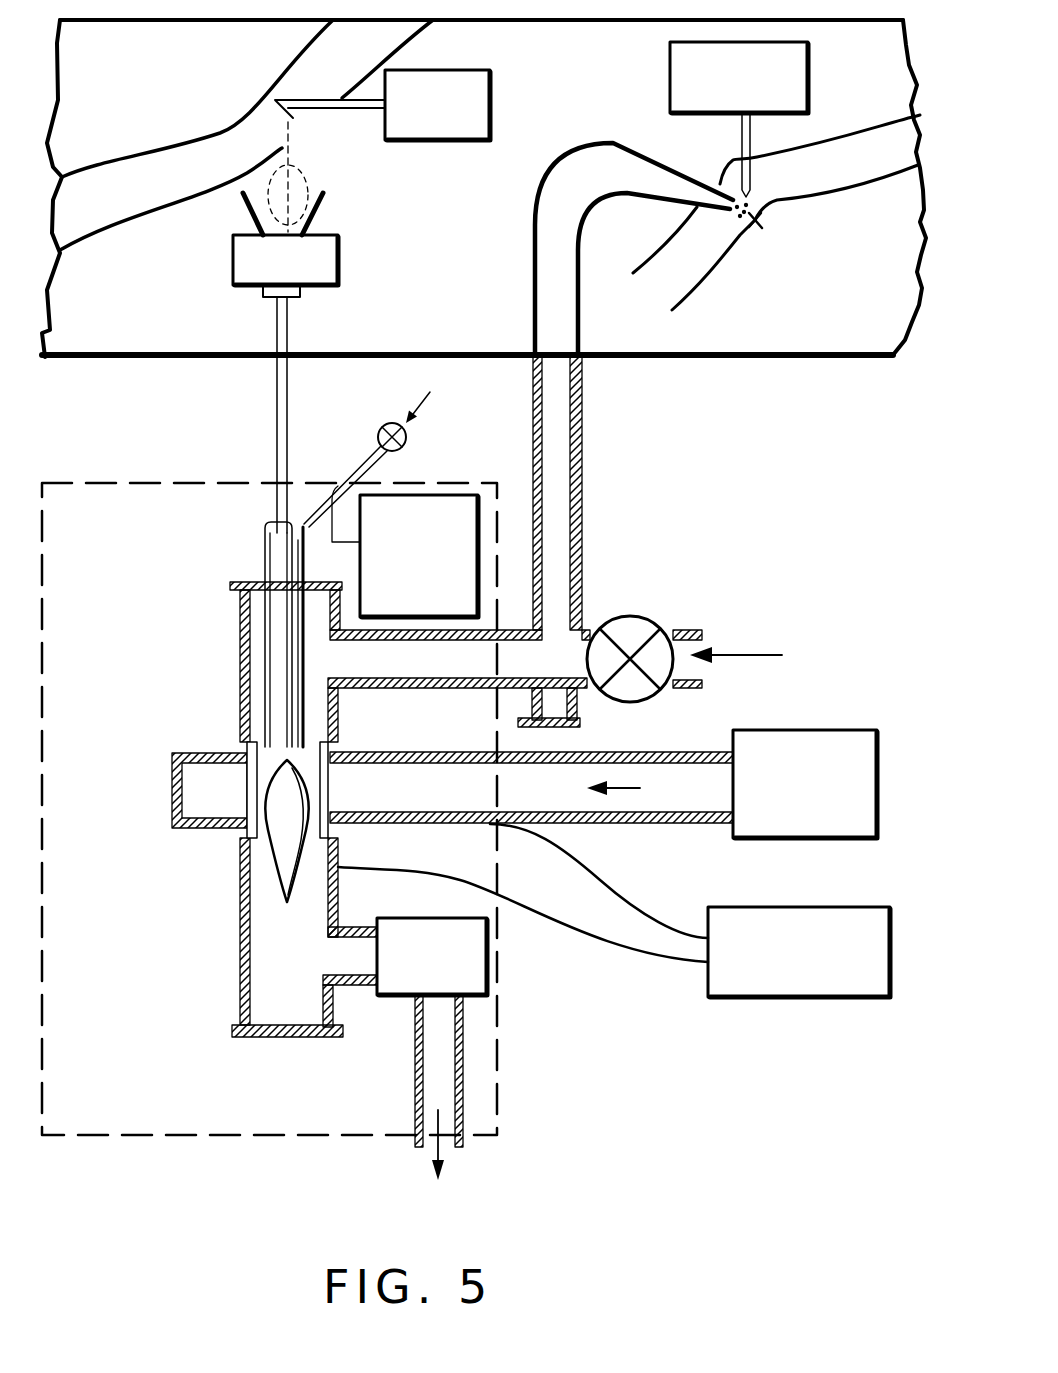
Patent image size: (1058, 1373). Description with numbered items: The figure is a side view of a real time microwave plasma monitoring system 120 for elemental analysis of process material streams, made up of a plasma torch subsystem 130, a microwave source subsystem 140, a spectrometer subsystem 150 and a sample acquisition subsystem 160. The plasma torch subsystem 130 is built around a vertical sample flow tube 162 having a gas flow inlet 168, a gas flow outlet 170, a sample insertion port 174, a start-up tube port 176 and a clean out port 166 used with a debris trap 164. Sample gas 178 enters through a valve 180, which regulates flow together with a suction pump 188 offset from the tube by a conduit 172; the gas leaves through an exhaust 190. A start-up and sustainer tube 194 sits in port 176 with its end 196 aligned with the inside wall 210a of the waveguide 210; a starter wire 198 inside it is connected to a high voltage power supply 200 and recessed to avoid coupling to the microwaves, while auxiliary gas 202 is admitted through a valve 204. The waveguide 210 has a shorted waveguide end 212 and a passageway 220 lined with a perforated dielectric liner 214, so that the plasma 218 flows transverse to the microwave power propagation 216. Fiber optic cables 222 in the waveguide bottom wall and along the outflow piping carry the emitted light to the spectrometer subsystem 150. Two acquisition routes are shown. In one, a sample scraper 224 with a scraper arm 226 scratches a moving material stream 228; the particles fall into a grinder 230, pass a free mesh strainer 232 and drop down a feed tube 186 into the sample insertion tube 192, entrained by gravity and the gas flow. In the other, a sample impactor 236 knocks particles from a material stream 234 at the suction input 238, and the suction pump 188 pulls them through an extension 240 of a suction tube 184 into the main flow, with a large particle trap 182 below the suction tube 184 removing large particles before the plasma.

The system 120 is at (795, 527).
The plasma torch subsystem 130 is at (97, 482).
The microwave source subsystem 140 is at (733, 748).
The spectrometer subsystem 150 is at (708, 987).
The sample acquisition subsystem 160 is at (795, 358).
The sample flow tube 162 is at (240, 677).
The debris trap 164 is at (238, 1012).
The clean out port 166 is at (260, 1038).
The gas flow inlet 168 is at (342, 670).
The gas flow outlet 170 is at (342, 987).
The conduit 172 is at (358, 930).
The sample insertion port 174 is at (263, 580).
The start-up tube port 176 is at (307, 587).
The sample gas 178 is at (742, 653).
The valve 180 is at (632, 623).
The large particle trap 182 is at (567, 727).
The suction tube 184 is at (583, 438).
The feed tube 186 is at (275, 407).
The suction pump 188 is at (402, 918).
The exhaust 190 is at (415, 1070).
The sample insertion tube 192 is at (265, 543).
The start-up and sustainer tube 194 is at (307, 657).
The end 196 is at (312, 743).
The starter wire 198 is at (336, 487).
The high voltage power supply 200 is at (432, 495).
The auxiliary gas 202 is at (428, 403).
The valve 204 is at (378, 428).
The waveguide 210 is at (643, 825).
The inside wall 210a is at (428, 767).
The shorted waveguide end 212 is at (172, 780).
The perforated dielectric liner 214 is at (247, 792).
The microwave power propagation 216 is at (627, 788).
The plasma 218 is at (275, 857).
The passageway 220 is at (315, 813).
The fiber optic cable 222 is at (568, 855).
The sample scraper 224 is at (428, 142).
The scraper arm 226 is at (323, 109).
The material stream 228 is at (183, 133).
The grinder 230 is at (318, 288).
The free mesh strainer 232 is at (267, 297).
The material stream 234 is at (845, 197).
The sample impactor 236 is at (700, 114).
The suction input 238 is at (758, 228).
The extension 240 is at (535, 308).